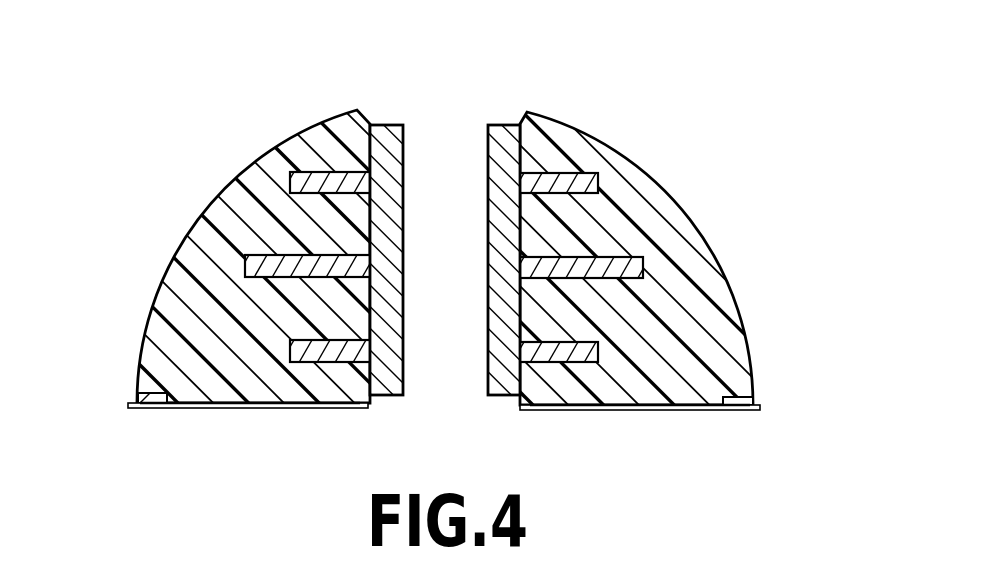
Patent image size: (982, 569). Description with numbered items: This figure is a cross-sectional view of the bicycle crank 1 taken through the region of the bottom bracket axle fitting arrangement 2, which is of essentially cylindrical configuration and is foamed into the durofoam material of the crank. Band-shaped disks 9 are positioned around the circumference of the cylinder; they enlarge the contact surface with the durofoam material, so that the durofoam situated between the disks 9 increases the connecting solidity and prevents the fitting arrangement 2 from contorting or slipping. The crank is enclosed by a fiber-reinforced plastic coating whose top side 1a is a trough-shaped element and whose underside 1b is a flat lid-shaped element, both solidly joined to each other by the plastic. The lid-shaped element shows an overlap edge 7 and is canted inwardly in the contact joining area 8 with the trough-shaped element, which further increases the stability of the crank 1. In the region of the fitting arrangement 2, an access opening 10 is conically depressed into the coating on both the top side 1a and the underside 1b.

The bicycle crank 1 is at (238, 118).
The top side of the fiber-reinforced plastic coating 1a is at (662, 178).
The underside of the fiber-reinforced plastic coating 1b is at (303, 409).
The bottom bracket axle fitting arrangement 2 is at (497, 126).
The overlap edge 7 is at (132, 403).
The contact joining area 8 is at (148, 386).
The band-shaped disks 9 is at (248, 263).
The access opening 10 is at (373, 120).